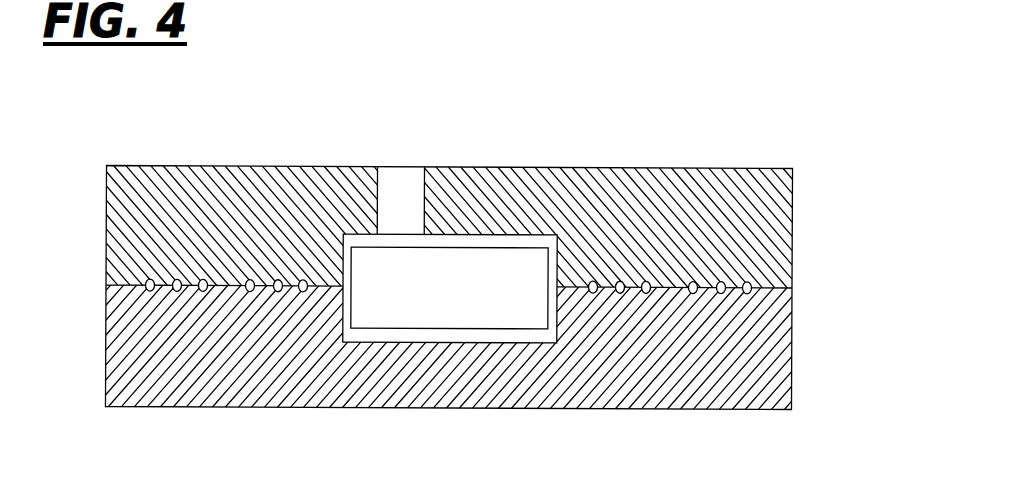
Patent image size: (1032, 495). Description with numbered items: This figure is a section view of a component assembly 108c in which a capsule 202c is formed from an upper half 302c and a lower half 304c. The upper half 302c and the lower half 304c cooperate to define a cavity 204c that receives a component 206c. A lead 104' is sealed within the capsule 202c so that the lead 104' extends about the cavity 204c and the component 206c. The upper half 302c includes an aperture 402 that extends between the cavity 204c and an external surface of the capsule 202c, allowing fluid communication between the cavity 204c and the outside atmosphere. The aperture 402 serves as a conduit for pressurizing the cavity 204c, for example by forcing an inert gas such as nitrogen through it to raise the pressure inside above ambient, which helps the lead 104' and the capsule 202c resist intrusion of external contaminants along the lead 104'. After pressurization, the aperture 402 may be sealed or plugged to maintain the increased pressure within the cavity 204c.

The component assembly 108c is at (570, 108).
The capsule 202c is at (803, 171).
The upper half 302c is at (693, 200).
The lower half 304c is at (700, 382).
The lead 104' is at (448, 197).
The aperture 402 is at (410, 182).
The cavity 204c is at (426, 334).
The component 206c is at (449, 288).